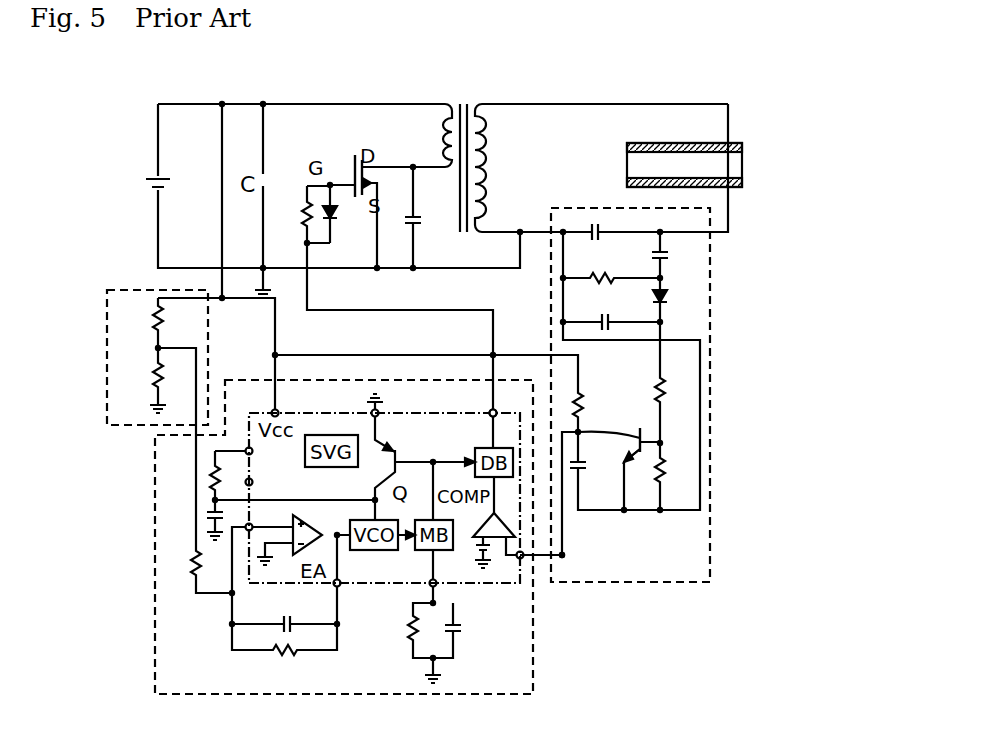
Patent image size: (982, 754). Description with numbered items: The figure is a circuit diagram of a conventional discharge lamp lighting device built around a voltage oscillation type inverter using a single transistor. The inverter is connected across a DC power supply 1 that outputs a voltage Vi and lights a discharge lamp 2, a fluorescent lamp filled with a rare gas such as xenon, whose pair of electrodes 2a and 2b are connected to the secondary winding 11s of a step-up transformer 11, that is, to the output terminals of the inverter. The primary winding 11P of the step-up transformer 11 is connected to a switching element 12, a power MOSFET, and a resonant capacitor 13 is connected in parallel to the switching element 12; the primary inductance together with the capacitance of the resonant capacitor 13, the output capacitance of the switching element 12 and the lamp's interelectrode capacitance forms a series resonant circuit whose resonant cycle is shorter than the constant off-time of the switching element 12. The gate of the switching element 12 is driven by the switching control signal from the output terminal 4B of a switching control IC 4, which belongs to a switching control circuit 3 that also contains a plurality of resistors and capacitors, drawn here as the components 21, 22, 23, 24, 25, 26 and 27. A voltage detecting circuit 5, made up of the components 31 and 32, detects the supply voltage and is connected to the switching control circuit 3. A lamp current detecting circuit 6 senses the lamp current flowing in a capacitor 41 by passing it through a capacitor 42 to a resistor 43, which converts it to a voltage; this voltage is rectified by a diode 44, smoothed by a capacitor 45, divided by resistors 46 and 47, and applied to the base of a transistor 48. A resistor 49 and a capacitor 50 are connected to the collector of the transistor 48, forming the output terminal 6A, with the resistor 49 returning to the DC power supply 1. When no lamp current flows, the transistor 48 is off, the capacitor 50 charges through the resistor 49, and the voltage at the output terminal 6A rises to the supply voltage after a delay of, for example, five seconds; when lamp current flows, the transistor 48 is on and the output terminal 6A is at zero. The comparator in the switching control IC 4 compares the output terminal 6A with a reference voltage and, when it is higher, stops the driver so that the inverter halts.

The DC power supply 1 is at (153, 183).
The discharge lamp 2 is at (690, 143).
The electrode 2a is at (627, 149).
The electrode 2b is at (627, 182).
The switching control circuit 3 is at (533, 656).
The switching control IC 4 is at (508, 583).
The output terminal 4B is at (490, 408).
The voltage detecting circuit 5 is at (208, 370).
The lamp current detecting circuit 6 is at (670, 583).
The output terminal 6A is at (565, 558).
The step-up transformer 11 is at (474, 104).
The primary winding 11P is at (422, 135).
The secondary winding 11s is at (601, 168).
The switching element 12 is at (342, 158).
The resonant capacitor 13 is at (425, 226).
The resistor 21 is at (228, 480).
The capacitor 22 is at (200, 515).
The capacitor 23 is at (468, 631).
The resistor 24 is at (397, 630).
The capacitor 25 is at (285, 610).
The resistor 26 is at (285, 670).
The resistor 27 is at (183, 563).
The resistor 31 is at (144, 319).
The resistor 32 is at (144, 376).
The capacitor 41 is at (606, 228).
The capacitor 42 is at (676, 256).
The resistor 43 is at (605, 272).
The diode 44 is at (677, 301).
The capacitor 45 is at (605, 317).
The resistor 46 is at (677, 393).
The resistor 47 is at (677, 473).
The transistor 48 is at (638, 434).
The resistor 49 is at (594, 400).
The capacitor 50 is at (595, 469).